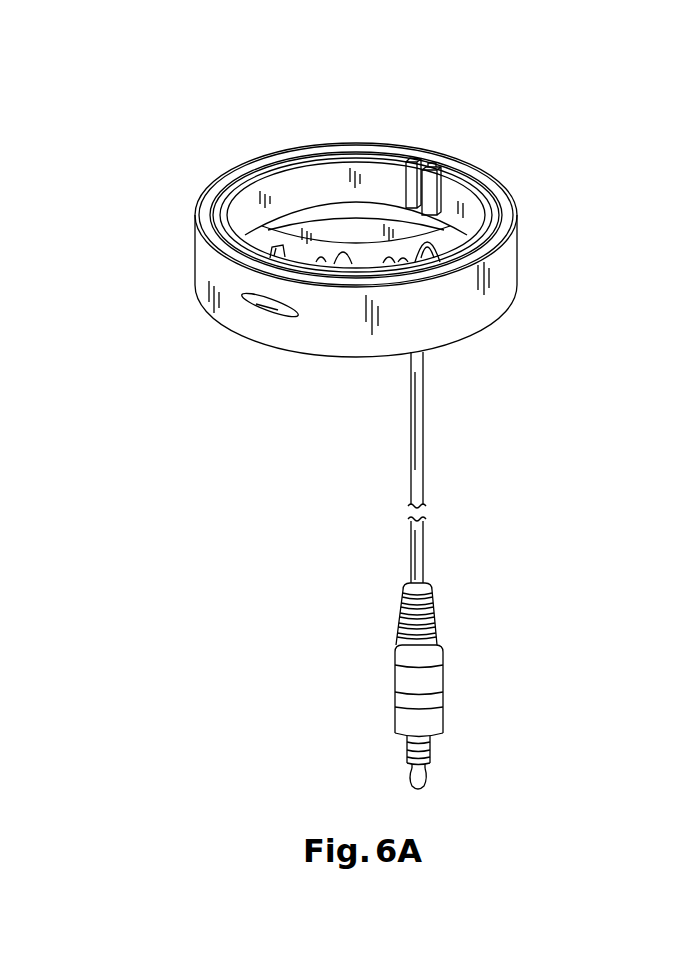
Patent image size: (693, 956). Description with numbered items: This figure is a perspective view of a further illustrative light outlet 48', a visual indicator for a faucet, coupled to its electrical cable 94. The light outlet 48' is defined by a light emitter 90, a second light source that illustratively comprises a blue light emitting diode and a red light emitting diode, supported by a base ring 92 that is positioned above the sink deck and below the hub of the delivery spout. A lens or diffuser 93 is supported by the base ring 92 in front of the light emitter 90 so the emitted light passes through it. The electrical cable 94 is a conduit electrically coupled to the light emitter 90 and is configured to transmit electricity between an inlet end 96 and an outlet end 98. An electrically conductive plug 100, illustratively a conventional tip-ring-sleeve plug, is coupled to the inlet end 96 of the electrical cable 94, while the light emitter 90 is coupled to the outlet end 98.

The base ring 92 is at (510, 255).
The light emitter 90 is at (287, 258).
The outlet end 98 is at (348, 240).
The light outlet 48' is at (227, 346).
The lens or diffuser 93 is at (272, 312).
The electrical cable 94 is at (422, 418).
The inlet end 96 is at (466, 650).
The plug 100 is at (432, 746).